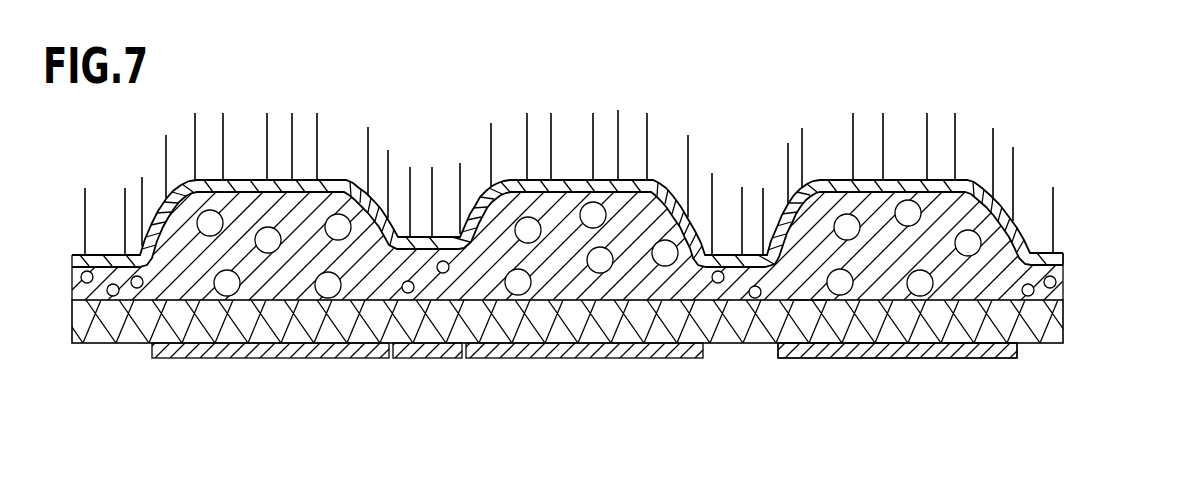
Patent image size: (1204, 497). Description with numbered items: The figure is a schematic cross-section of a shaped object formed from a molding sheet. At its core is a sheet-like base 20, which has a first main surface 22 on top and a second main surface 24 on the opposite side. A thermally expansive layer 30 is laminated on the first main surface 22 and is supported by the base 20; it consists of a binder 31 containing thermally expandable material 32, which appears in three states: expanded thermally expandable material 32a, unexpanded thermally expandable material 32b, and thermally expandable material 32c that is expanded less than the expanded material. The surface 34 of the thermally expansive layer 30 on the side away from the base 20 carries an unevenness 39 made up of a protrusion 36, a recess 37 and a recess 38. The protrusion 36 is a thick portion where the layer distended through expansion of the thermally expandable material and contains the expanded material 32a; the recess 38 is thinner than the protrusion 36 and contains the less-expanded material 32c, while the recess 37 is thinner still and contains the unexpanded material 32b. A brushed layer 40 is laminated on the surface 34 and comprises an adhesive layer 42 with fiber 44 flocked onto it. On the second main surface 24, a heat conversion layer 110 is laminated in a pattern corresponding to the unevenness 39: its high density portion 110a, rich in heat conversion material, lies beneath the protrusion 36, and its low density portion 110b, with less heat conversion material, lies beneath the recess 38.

The base 20 is at (1063, 323).
The first main surface 22 is at (808, 322).
The second main surface 24 is at (1020, 357).
The thermally expansive layer 30 is at (587, 327).
The binder 31 is at (625, 297).
The thermally expandable material 32 is at (568, 310).
The expanded thermally expandable material 32a is at (664, 266).
The unexpanded thermally expandable material 32b is at (720, 283).
The thermally expandable material expanded less than the expanded thermally expandab 32c is at (505, 341).
The surface 34 is at (107, 283).
The protrusion 36 is at (625, 180).
The recess 37 is at (736, 165).
The recess 38 is at (426, 236).
The unevenness 39 is at (585, 142).
The brushed layer 40 is at (626, 188).
The adhesive layer 42 is at (1063, 256).
The fiber 44 is at (1130, 265).
The heat conversion layer 110 is at (582, 412).
The high density portion 110a is at (273, 360).
The low density portion 110b is at (418, 387).